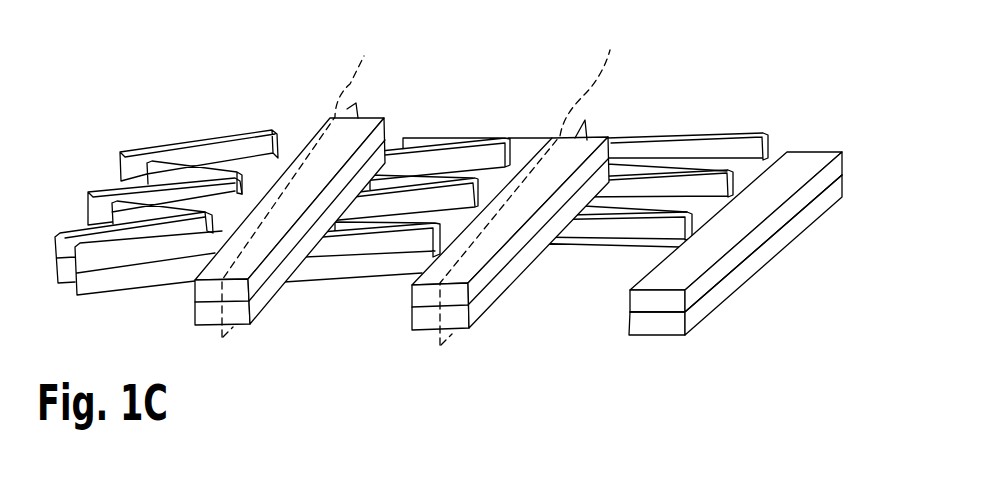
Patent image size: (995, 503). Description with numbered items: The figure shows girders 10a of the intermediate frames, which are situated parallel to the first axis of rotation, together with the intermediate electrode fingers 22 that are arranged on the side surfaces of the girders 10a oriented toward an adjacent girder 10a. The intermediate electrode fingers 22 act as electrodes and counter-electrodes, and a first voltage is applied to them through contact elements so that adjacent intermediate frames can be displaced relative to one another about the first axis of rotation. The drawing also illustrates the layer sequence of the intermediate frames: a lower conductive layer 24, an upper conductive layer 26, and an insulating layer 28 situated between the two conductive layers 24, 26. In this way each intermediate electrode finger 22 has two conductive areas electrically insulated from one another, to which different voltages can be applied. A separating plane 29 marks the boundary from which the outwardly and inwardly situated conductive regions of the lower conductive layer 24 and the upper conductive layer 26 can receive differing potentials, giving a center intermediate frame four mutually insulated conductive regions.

The girder 10a is at (537, 277).
The intermediate electrode fingers 22 is at (190, 179).
The lower conductive layer 24 is at (753, 262).
The upper conductive layer 26 is at (805, 167).
The insulating layer 28 is at (780, 228).
The separating plane 29 is at (422, 181).